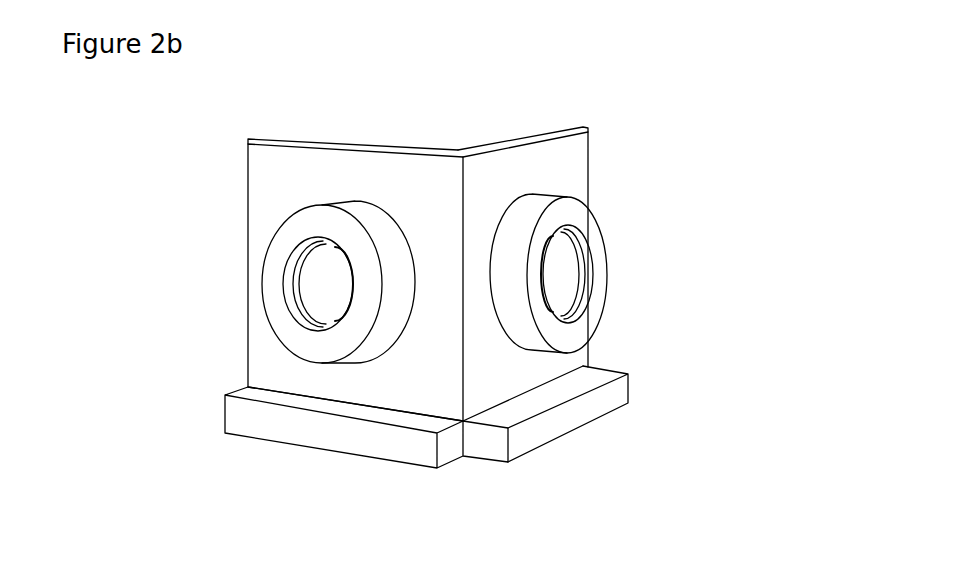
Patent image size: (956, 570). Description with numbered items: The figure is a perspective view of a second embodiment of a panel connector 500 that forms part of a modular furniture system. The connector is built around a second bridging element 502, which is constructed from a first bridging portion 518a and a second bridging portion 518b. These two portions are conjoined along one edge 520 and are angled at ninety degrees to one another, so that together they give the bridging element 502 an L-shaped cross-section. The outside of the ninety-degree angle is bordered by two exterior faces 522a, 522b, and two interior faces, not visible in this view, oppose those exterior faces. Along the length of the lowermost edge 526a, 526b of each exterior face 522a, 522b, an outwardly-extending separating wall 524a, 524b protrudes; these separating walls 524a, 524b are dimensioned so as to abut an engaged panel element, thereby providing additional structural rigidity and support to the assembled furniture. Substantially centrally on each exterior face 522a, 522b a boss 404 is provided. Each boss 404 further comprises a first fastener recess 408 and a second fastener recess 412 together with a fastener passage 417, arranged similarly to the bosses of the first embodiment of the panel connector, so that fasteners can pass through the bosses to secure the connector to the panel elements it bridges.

The panel connector 500 is at (688, 93).
The bridging element 502 is at (297, 122).
The edge 520 is at (470, 215).
The first bridging portion 518a is at (321, 139).
The second bridging portion 518b is at (498, 140).
The exterior face 522a is at (385, 171).
The exterior face 522b is at (540, 161).
The separating wall 524a is at (331, 437).
The separating wall 524b is at (616, 402).
The lowermost edge 526a is at (246, 387).
The lowermost edge 526b is at (590, 370).
The boss 404 is at (261, 238).
The first fastener recess 408 is at (288, 301).
The second fastener recess 412 is at (356, 273).
The fastener passage 417 is at (354, 281).